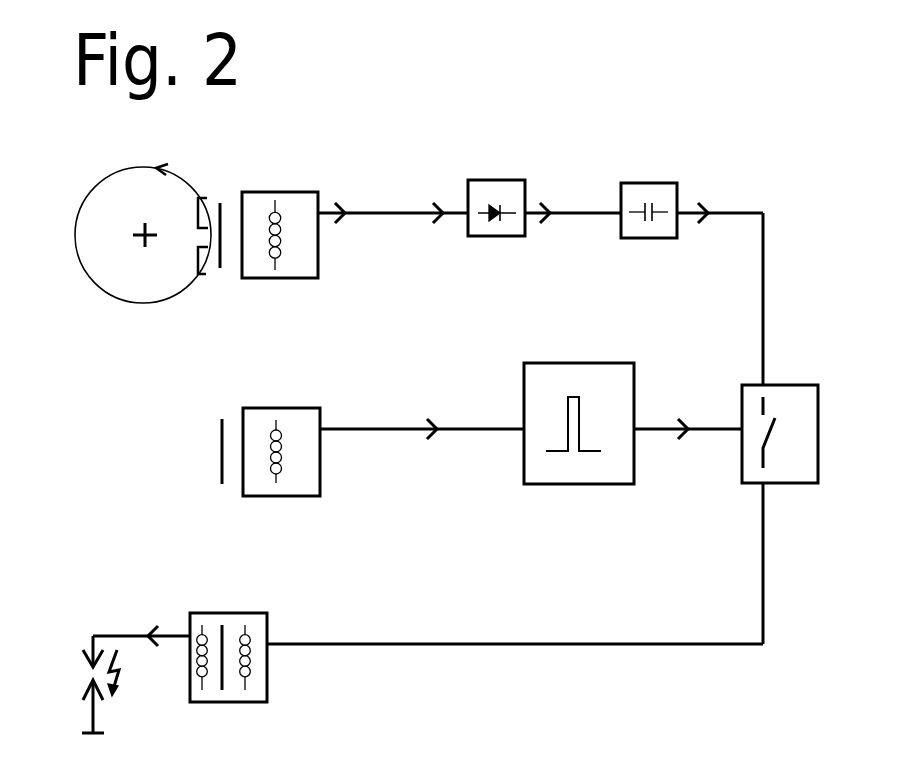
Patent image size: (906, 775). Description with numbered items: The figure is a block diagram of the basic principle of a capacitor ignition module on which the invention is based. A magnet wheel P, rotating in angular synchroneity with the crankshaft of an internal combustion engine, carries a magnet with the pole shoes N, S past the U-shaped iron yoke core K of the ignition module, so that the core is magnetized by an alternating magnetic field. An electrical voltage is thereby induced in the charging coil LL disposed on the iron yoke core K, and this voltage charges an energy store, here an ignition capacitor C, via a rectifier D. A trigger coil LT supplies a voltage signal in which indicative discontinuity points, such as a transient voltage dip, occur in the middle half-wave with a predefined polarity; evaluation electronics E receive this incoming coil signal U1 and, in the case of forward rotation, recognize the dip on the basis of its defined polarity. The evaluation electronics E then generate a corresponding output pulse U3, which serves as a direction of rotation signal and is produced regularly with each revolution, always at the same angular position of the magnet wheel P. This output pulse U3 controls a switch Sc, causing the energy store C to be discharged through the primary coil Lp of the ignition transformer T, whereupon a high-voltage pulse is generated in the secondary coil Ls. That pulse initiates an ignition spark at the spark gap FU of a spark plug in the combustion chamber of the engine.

The magnet wheel P is at (143, 212).
The pole shoe N is at (186, 215).
The pole shoe S is at (192, 264).
The charging coil LL is at (283, 213).
The rectifier D is at (496, 184).
The ignition capacitor C is at (649, 185).
The switch Sc is at (780, 412).
The evaluation electronics E is at (579, 399).
The incoming coil signal U1 is at (422, 403).
The output pulse U3 is at (688, 403).
The trigger coil LT is at (282, 432).
The iron yoke core K is at (201, 451).
The ignition transformer T is at (229, 634).
The secondary coil Ls is at (192, 675).
The primary coil Lp is at (257, 678).
The spark gap FU is at (72, 684).